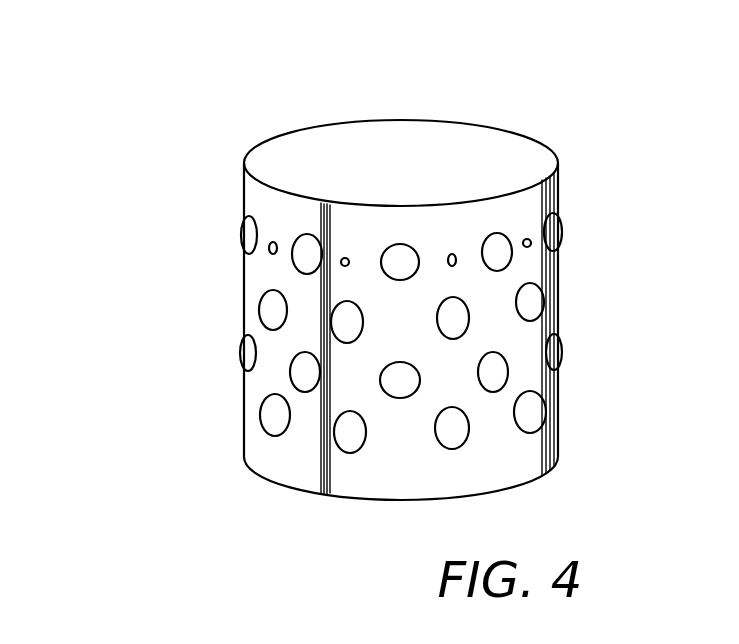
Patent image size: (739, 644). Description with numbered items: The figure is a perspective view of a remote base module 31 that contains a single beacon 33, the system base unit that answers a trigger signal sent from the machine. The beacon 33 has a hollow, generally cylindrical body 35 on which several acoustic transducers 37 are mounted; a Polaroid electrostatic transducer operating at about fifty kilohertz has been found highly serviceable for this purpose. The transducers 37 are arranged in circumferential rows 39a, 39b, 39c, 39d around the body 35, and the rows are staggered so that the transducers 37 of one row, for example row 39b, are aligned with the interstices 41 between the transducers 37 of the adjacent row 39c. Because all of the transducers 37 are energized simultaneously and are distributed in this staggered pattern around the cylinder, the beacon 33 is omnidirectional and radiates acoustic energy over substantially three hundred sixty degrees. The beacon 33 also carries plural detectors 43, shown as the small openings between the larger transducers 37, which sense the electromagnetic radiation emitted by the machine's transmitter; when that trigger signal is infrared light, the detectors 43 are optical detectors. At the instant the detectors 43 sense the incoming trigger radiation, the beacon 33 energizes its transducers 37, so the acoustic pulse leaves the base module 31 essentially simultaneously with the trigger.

The base module 31 is at (170, 277).
The beacon 33 is at (415, 118).
The hollow generally cylindrical body 35 is at (268, 200).
The acoustic transducers 37 is at (348, 442).
The circumferential row 39a is at (535, 415).
The circumferential row 39b is at (563, 350).
The circumferential row 39c is at (263, 312).
The circumferential row 39d is at (242, 240).
The interstices 41 is at (307, 317).
The detectors 43 is at (345, 258).